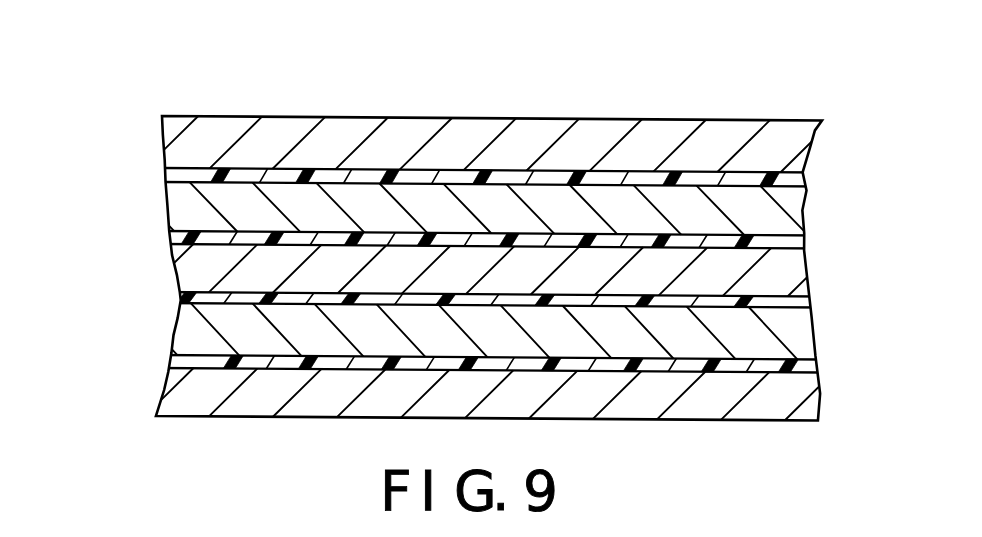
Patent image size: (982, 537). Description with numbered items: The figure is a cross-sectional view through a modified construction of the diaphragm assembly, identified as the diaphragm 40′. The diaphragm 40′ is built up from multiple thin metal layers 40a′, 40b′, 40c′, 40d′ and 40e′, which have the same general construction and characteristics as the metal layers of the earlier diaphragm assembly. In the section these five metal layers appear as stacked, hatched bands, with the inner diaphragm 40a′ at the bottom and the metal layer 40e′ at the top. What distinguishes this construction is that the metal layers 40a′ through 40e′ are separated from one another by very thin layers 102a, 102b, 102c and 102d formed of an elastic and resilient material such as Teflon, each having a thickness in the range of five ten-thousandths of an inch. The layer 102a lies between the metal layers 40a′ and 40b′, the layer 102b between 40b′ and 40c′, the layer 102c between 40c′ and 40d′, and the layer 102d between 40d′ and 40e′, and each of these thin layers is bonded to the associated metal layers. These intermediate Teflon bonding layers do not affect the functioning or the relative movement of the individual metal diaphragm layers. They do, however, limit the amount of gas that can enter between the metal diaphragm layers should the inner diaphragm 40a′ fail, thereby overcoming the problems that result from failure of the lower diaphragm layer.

The diaphragm 40′ is at (140, 117).
The inner diaphragm metal layer 40a′ is at (792, 390).
The thin metal layer 40b′ is at (785, 322).
The thin metal layer 40c′ is at (775, 267).
The thin metal layer 40d′ is at (790, 204).
The thin metal layer 40e′ is at (787, 145).
The thin Teflon layer 102a is at (190, 360).
The thin Teflon layer 102b is at (180, 294).
The thin Teflon layer 102c is at (172, 234).
The thin Teflon layer 102d is at (168, 175).